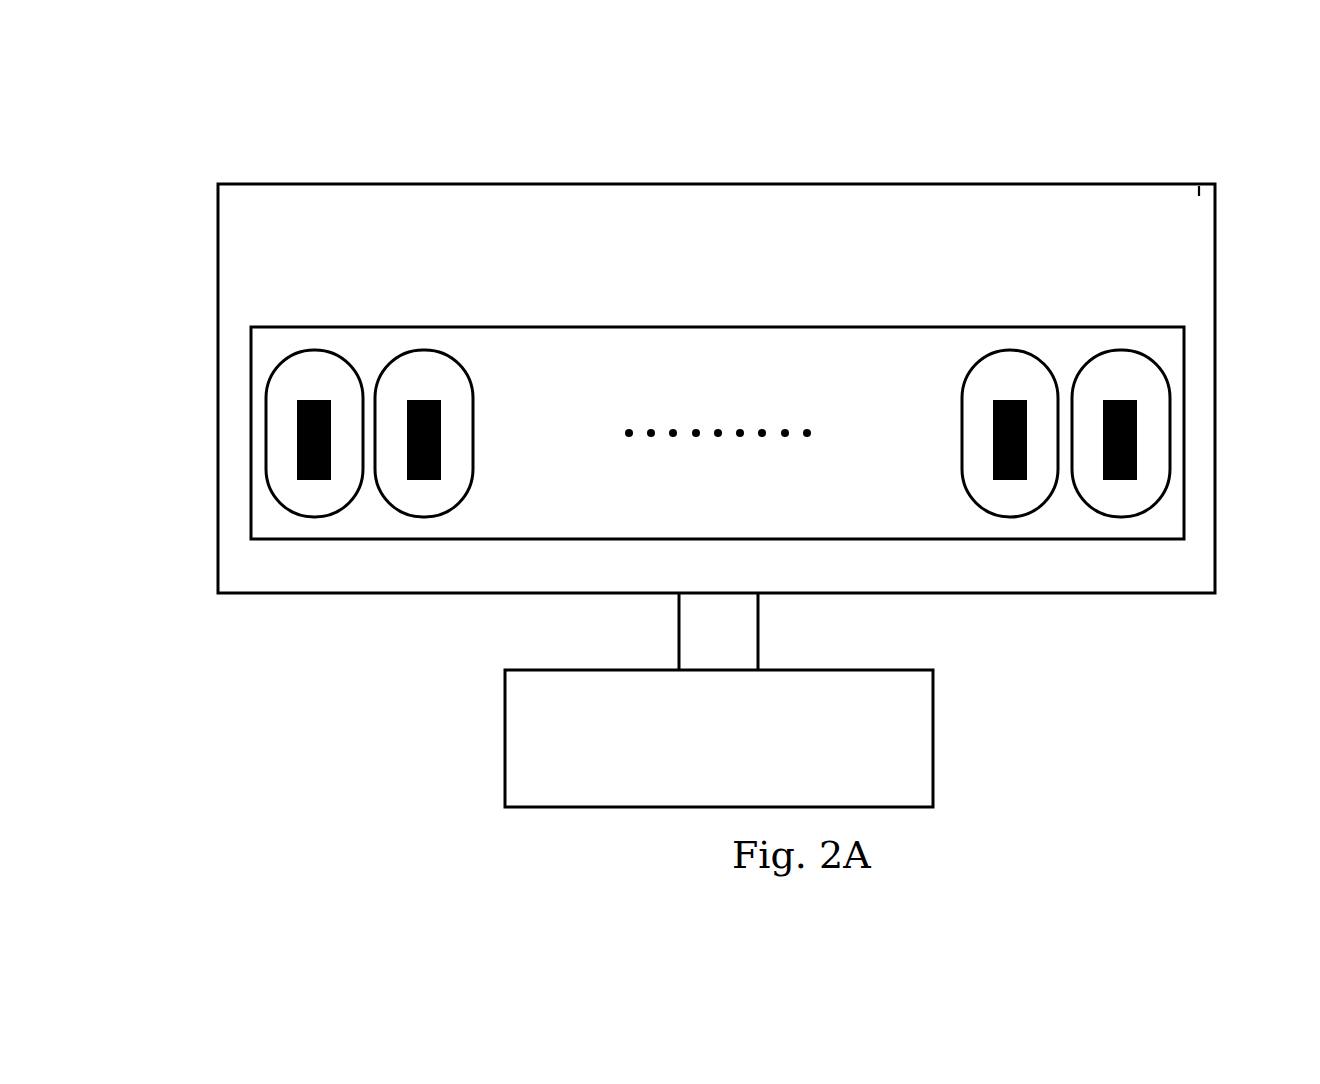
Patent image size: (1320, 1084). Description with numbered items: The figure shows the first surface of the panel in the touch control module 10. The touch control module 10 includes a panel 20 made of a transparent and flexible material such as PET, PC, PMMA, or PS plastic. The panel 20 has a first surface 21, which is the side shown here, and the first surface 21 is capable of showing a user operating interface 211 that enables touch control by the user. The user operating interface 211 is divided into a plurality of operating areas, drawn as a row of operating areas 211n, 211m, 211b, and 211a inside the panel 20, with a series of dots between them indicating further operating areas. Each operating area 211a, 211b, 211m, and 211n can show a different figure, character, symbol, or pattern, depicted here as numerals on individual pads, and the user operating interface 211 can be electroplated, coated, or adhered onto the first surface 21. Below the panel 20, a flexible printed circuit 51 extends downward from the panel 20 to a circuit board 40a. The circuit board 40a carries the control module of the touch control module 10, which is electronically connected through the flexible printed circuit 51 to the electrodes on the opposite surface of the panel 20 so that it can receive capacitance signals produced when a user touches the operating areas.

The touch control module 10 is at (1110, 124).
The panel 20 is at (246, 172).
The first surface 21 is at (1199, 196).
The user operating interface 211 is at (247, 324).
The operating area 211a is at (1120, 350).
The operating area 211b is at (1010, 350).
The operating area 211m is at (425, 350).
The operating area 211n is at (313, 350).
The flexible printed circuit 51 is at (683, 645).
The circuit board 40a is at (515, 689).